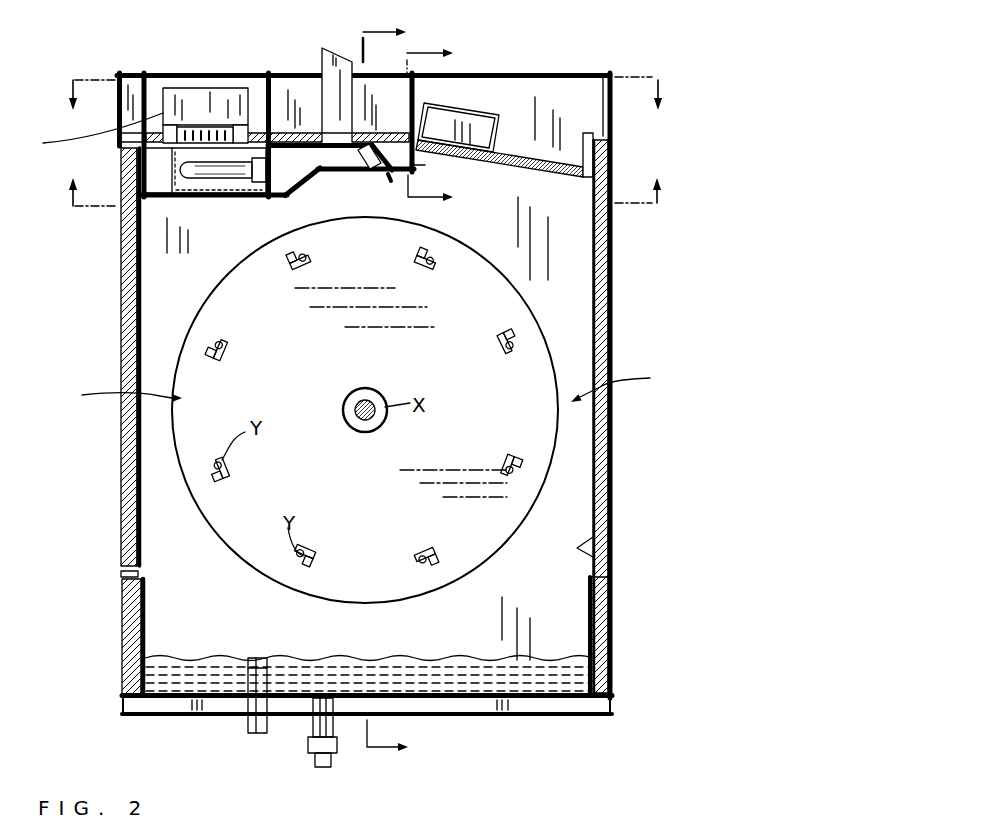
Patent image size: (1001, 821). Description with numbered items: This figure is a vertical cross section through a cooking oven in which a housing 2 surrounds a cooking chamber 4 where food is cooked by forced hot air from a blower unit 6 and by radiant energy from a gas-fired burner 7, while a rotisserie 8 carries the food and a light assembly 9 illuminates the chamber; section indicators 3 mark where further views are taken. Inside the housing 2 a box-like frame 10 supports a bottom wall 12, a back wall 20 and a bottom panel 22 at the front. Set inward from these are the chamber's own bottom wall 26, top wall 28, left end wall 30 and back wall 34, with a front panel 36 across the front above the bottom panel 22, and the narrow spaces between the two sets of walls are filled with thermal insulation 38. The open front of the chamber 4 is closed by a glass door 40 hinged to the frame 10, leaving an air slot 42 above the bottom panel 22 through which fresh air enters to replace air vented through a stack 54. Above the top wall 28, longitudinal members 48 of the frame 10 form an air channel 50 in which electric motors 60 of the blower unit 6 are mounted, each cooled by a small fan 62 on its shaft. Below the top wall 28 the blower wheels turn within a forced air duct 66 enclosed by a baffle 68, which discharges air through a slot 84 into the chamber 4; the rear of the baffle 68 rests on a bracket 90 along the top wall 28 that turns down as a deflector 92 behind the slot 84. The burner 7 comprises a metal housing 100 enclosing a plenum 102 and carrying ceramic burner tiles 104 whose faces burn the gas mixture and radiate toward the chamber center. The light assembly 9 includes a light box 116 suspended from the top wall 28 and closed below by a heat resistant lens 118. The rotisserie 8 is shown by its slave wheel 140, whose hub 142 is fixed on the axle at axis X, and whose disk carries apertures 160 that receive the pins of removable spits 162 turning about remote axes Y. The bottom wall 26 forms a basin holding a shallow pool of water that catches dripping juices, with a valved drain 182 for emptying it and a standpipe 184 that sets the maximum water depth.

The housing 2 is at (614, 692).
The section line 3- 3 is at (436, 123).
The cooking chamber 4 is at (370, 239).
The blower unit 6 is at (345, 159).
The gas-fired burner 7 is at (490, 100).
The rotisserie 8 is at (310, 388).
The light assembly 9 is at (219, 205).
The frame 10 is at (603, 72).
The bottom wall 12 is at (580, 714).
The back wall 20 is at (614, 508).
The bottom panel 22 is at (122, 628).
The bottom wall 26 is at (403, 693).
The top wall 28 is at (568, 180).
The left end wall 30 is at (158, 275).
The back wall 34 is at (614, 558).
The front panel 36 is at (146, 622).
The thermal insulation 38 is at (556, 158).
The door 40 is at (120, 463).
The air slot 42 is at (121, 580).
The longitudinal members 48 is at (142, 104).
The air channel 50 is at (152, 90).
The stack 54 is at (330, 62).
The electric motors 60 is at (200, 103).
The small fan 62 is at (235, 130).
The forced air duct 66 is at (288, 160).
The baffle 68 is at (292, 200).
The slot 84 is at (371, 168).
The bracket 90 is at (425, 165).
The deflector 92 is at (388, 182).
The metal housing 100 is at (450, 108).
The plenum 102 is at (485, 133).
The ceramic burner tiles 104 is at (477, 160).
The light box 116 is at (172, 175).
The lens 118 is at (182, 197).
The slave wheel 140 is at (523, 357).
The hub 142 is at (361, 420).
The apertures 160 is at (512, 353).
The spits 162 is at (485, 345).
The drain 182 is at (332, 767).
The standpipe 184 is at (270, 669).